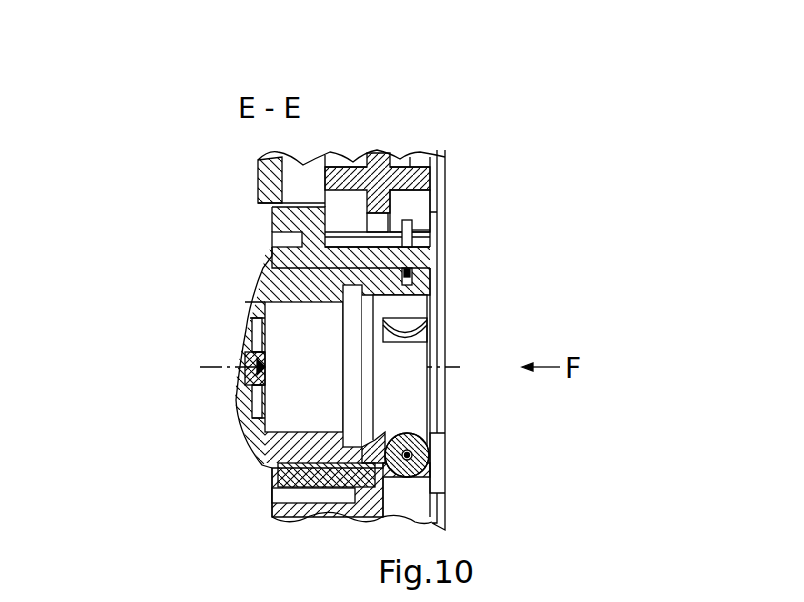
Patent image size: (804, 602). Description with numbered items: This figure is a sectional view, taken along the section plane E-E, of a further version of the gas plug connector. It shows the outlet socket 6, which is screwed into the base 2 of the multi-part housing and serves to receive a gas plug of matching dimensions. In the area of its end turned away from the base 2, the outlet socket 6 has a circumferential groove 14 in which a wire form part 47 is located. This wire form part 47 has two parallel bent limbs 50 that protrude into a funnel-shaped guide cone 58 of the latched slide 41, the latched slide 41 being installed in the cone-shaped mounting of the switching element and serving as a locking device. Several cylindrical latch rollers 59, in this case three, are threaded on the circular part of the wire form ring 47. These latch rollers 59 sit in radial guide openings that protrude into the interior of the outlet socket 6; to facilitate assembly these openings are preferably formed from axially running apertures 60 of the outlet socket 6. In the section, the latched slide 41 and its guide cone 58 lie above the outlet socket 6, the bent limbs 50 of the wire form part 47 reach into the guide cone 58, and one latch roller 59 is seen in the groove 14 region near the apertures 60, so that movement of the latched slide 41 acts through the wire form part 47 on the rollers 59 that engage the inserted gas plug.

The base 2 is at (367, 493).
The outlet socket 6 is at (275, 443).
The circumferential groove 14 is at (430, 268).
The latched slide 41 is at (362, 178).
The wire form part 47 is at (430, 451).
The bent limbs 50 is at (408, 230).
The funnel-shaped guide cone 58 is at (403, 202).
The latch rollers 59 is at (415, 465).
The apertures 60 is at (427, 342).